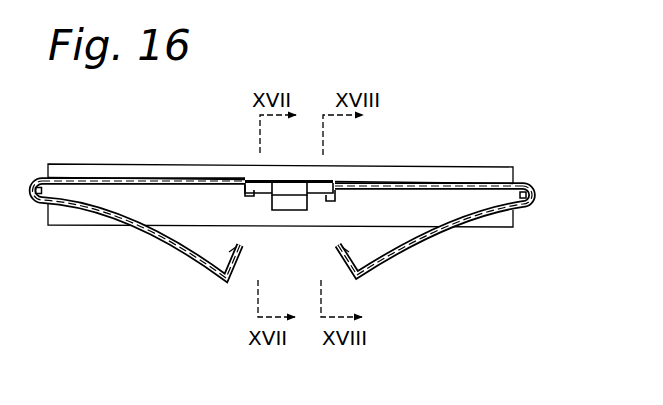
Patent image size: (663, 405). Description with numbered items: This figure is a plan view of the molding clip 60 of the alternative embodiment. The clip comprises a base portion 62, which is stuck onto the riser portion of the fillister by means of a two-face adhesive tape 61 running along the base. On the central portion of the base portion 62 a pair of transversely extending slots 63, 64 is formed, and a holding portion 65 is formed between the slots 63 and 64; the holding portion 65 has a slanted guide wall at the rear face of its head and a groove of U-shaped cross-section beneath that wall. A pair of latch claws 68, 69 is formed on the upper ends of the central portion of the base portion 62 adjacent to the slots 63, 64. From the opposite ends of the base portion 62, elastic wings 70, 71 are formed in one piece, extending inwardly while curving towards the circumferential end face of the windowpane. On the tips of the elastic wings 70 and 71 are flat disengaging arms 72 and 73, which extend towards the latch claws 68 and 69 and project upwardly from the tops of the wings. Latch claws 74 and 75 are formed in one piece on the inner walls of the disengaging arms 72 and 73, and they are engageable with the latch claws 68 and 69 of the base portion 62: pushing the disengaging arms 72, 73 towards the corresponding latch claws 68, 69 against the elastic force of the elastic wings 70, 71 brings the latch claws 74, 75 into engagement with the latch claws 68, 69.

The molding clip 60 is at (451, 159).
The two-face adhesive tape 61 is at (142, 178).
The base portion 62 is at (188, 183).
The slot 63 is at (262, 190).
The slot 64 is at (313, 176).
The holding portion 65 is at (290, 202).
The latch claw 68 is at (253, 197).
The latch claw 69 is at (330, 201).
The elastic wing 70 is at (152, 228).
The elastic wing 71 is at (435, 229).
The disengaging arm 72 is at (242, 263).
The disengaging arm 73 is at (344, 268).
The latch claw 74 is at (224, 253).
The latch claw 75 is at (356, 249).